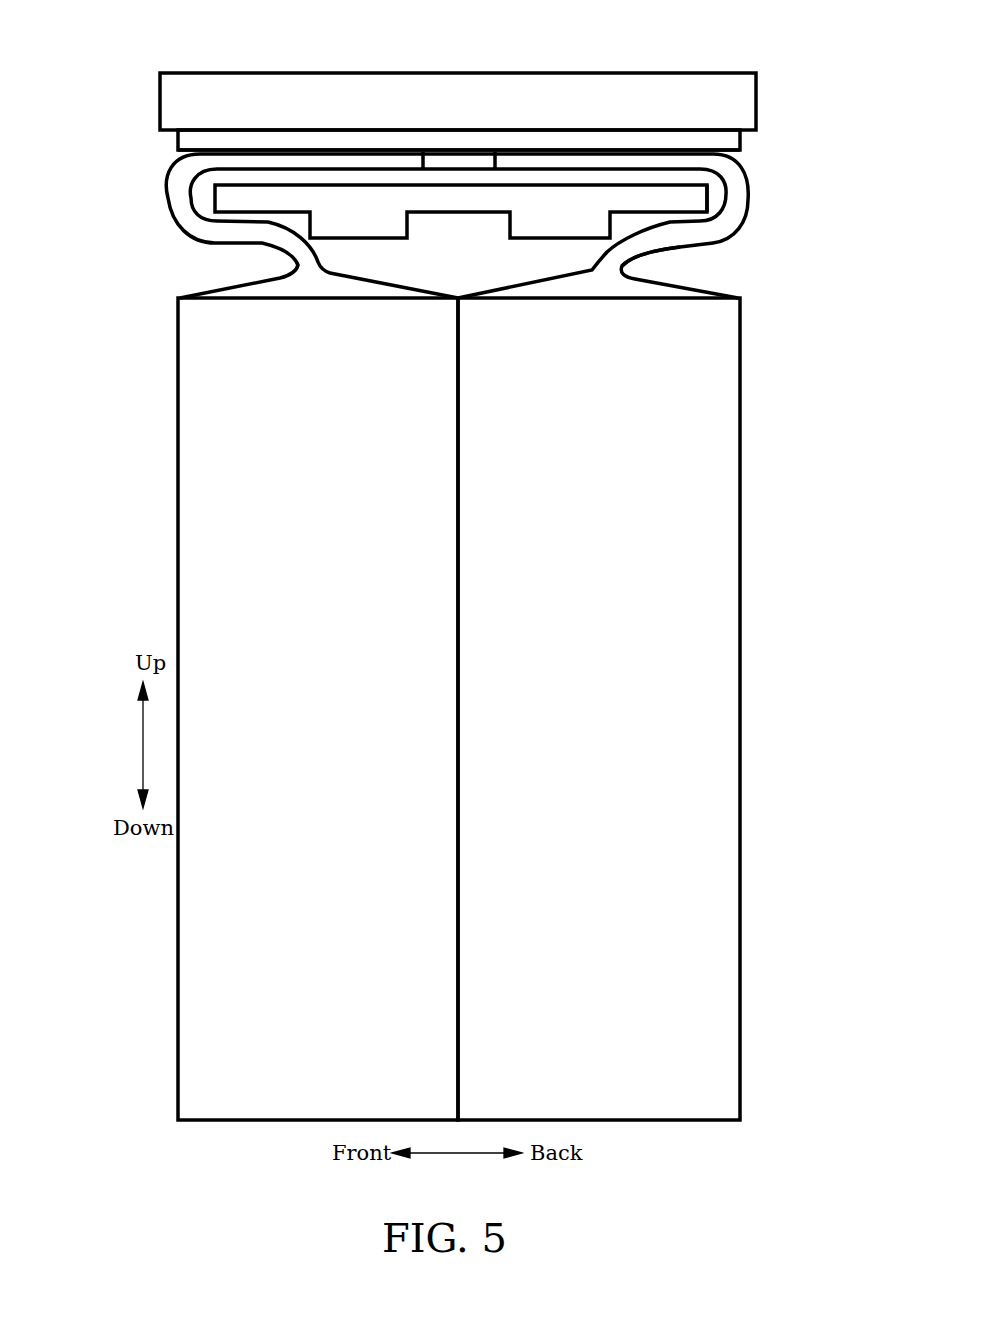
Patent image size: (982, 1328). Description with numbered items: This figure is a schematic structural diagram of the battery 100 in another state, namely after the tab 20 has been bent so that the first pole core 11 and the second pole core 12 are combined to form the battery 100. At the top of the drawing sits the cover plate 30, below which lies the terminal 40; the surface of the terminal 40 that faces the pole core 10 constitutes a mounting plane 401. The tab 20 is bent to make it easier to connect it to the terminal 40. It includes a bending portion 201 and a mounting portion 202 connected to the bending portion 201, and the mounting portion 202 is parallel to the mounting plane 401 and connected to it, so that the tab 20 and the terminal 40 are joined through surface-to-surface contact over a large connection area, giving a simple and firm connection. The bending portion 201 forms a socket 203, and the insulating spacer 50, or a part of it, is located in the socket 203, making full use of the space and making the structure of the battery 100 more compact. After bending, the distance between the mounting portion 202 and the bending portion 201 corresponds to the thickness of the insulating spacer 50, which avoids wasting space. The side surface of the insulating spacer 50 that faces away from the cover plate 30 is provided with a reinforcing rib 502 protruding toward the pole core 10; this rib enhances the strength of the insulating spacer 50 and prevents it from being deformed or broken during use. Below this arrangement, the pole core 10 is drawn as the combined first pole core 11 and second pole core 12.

The battery 100 is at (490, 30).
The cover plate 30 is at (203, 108).
The terminal 40 is at (203, 142).
The mounting plane 401 is at (237, 148).
The tab 20 is at (87, 198).
The bending portion 201 is at (202, 227).
The mounting portion 202 is at (330, 163).
The insulating spacer 50 is at (690, 197).
The socket 203 is at (713, 192).
The reinforcing rib 502 is at (637, 250).
The pole core 10 is at (87, 420).
The first pole core 11 is at (480, 472).
The second pole core 12 is at (195, 467).